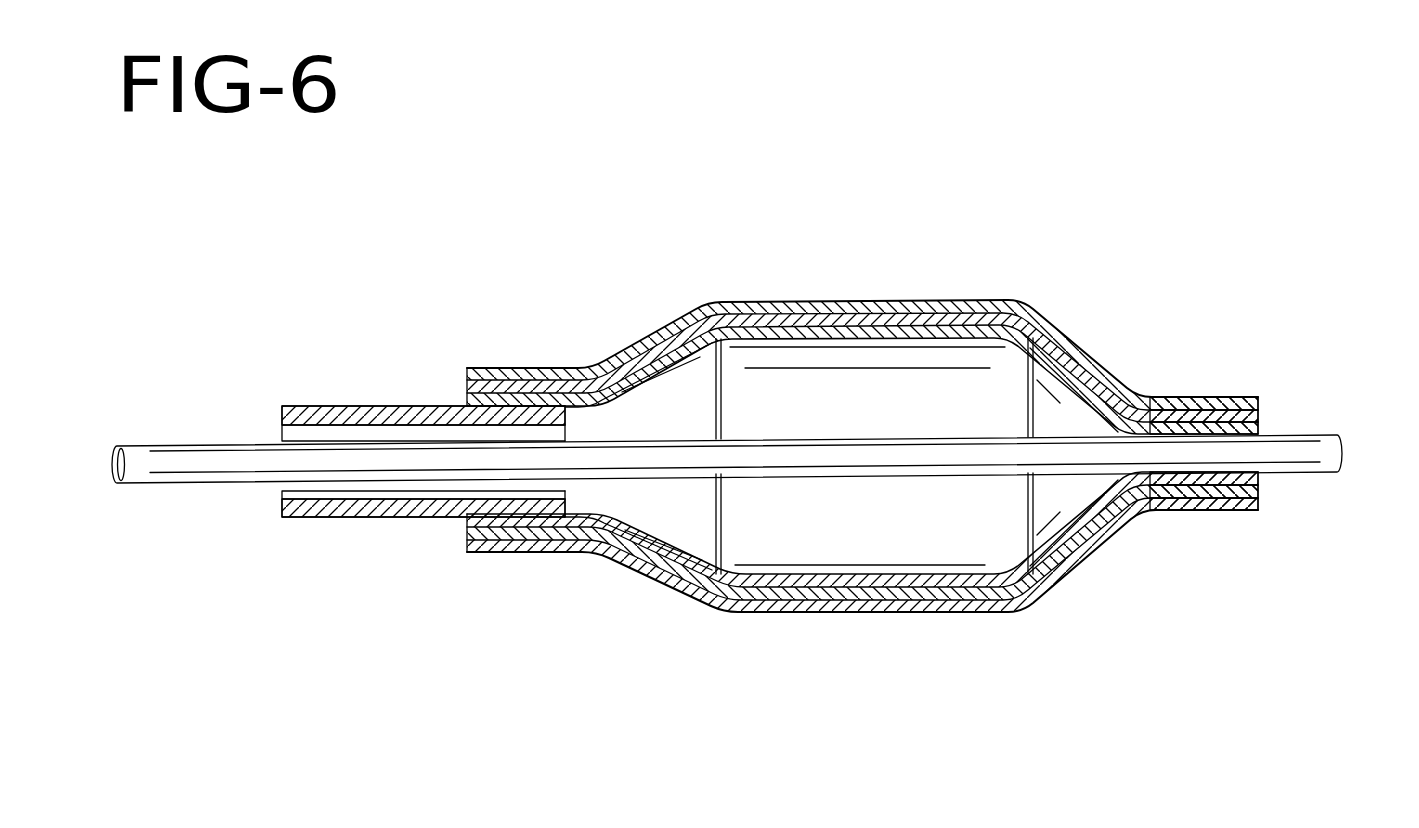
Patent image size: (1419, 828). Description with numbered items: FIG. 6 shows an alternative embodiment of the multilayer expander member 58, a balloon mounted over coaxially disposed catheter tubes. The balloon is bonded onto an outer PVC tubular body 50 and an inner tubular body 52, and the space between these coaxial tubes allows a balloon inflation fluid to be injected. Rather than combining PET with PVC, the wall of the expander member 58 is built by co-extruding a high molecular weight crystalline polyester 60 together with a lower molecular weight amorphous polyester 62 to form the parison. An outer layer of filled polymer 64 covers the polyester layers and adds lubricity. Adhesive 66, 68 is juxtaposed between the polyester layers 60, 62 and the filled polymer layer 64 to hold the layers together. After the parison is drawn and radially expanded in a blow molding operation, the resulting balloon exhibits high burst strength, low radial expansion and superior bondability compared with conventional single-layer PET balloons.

The outer PVC tubular body 50 is at (372, 402).
The inner tubular body 52 is at (222, 487).
The multilayer expander member 58 is at (882, 287).
The high molecular weight crystalline polyester 60 is at (1263, 418).
The lower molecular weight amorphous polyester 62 is at (1260, 426).
The outer layer of filled polymer 64 is at (1196, 395).
The adhesive 66 is at (895, 614).
The adhesive 68 is at (850, 614).